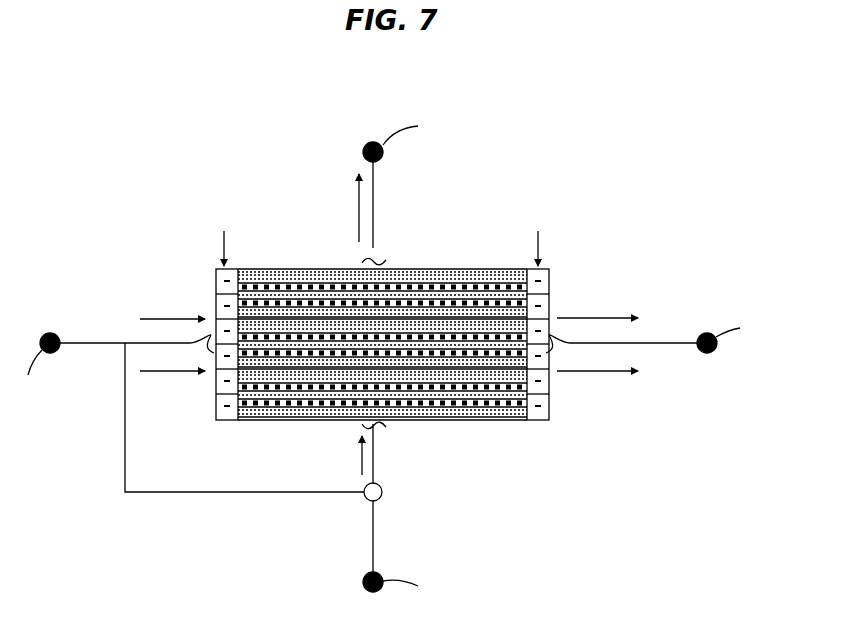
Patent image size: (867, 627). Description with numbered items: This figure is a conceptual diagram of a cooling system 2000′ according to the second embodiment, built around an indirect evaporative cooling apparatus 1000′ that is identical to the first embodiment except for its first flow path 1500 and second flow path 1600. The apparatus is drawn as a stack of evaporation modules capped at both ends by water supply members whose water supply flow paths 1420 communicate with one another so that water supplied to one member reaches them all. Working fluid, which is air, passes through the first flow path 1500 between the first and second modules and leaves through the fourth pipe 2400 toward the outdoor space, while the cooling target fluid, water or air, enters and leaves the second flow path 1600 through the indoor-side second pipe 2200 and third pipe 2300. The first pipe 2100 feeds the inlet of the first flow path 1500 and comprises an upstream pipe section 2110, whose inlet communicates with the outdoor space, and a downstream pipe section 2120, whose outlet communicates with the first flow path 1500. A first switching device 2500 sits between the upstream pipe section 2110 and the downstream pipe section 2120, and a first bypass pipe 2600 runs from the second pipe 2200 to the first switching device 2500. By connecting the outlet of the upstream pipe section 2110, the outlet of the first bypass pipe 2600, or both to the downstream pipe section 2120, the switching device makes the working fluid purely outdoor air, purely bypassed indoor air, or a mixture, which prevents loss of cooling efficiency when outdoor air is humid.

The cooling system 2000′ is at (176, 199).
The indirect evaporative cooling apparatus 1000′ is at (446, 264).
The water supply flow path 1420 is at (224, 267).
The first flow path 1500 is at (382, 262).
The second flow path 1600 is at (206, 350).
The fourth pipe 2400 is at (375, 182).
The second pipe 2200 is at (88, 346).
The third pipe 2300 is at (678, 346).
The first pipe 2100 is at (478, 489).
The 1-2-th pipe 2120 is at (376, 455).
The 1-1-th pipe 2110 is at (376, 558).
The first switching device 2500 is at (366, 499).
The first bypass pipe 2600 is at (198, 494).